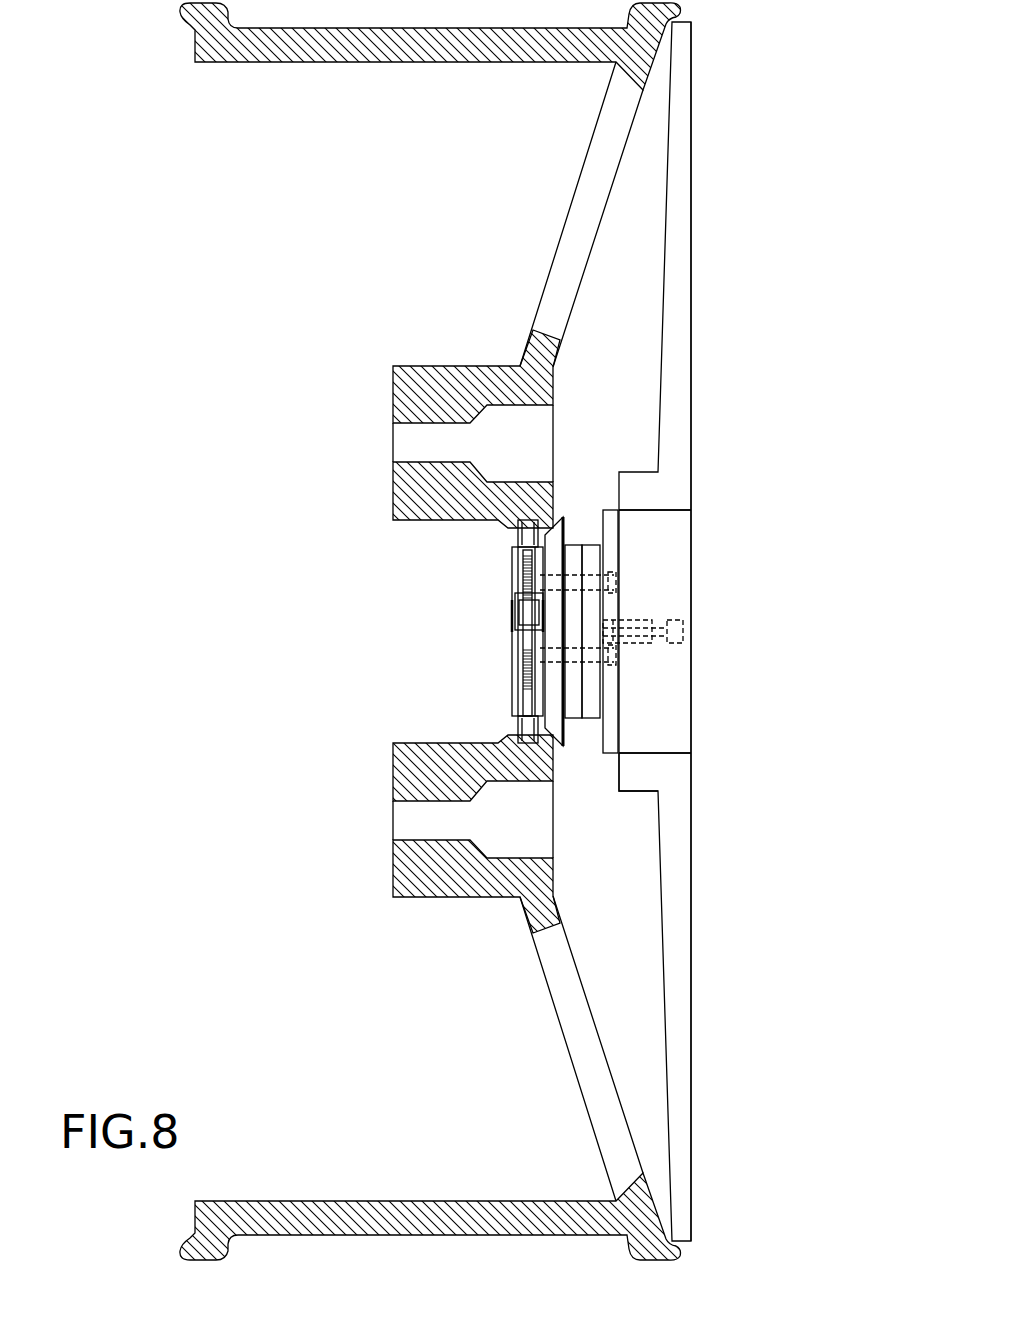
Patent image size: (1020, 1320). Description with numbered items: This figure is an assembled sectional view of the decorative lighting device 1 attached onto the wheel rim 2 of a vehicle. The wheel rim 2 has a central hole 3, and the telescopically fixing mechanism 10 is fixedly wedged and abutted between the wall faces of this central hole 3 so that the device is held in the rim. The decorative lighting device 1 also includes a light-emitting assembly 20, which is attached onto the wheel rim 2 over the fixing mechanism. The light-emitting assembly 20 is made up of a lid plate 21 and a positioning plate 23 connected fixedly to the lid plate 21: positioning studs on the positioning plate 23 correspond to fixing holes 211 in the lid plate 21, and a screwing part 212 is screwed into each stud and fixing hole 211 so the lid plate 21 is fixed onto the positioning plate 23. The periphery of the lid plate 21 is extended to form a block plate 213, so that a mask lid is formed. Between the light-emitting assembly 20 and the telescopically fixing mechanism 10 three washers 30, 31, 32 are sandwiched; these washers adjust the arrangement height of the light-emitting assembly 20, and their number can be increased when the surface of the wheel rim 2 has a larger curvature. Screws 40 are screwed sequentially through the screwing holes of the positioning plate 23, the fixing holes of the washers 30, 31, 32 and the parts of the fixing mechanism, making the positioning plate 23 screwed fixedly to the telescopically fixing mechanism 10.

The decorative lighting device 1 is at (725, 535).
The wheel rim 2 is at (545, 386).
The central hole 3 is at (522, 538).
The telescopically fixing mechanism 10 is at (507, 681).
The light-emitting assembly 20 is at (693, 948).
The lid plate 21 is at (680, 843).
The positioning plate 23 is at (612, 740).
The washer 30 is at (592, 705).
The washer 31 is at (578, 681).
The washer 32 is at (565, 737).
The screw 40 is at (598, 580).
The fixing hole 211 is at (695, 622).
The screwing part 212 is at (695, 638).
The block plate 213 is at (640, 785).